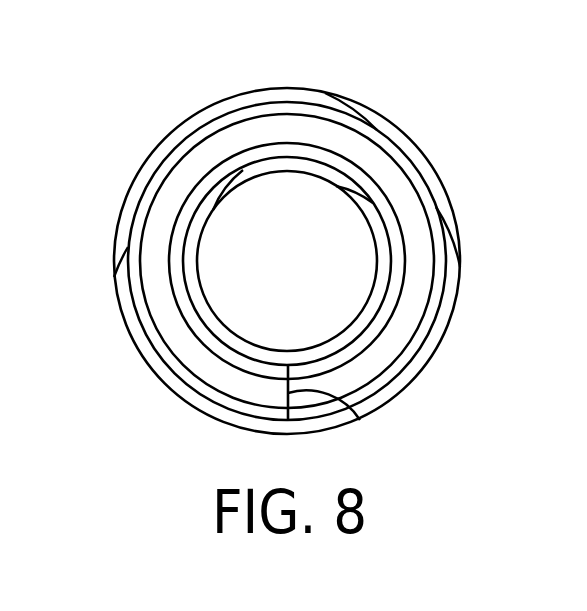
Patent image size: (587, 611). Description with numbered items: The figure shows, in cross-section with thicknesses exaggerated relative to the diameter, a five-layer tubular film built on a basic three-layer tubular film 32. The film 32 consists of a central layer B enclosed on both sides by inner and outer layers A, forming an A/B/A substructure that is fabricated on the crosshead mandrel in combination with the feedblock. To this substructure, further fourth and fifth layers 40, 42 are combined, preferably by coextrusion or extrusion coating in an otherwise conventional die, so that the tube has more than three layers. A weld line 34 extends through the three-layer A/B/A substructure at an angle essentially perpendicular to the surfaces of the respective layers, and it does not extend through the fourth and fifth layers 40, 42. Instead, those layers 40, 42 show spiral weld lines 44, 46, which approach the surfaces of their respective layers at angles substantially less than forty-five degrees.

The tubular film 32 is at (268, 100).
The fourth layer 40 is at (195, 120).
The spiral weld line 44 is at (343, 108).
The fifth layer 42 is at (380, 266).
The spiral weld line 46 is at (198, 304).
The weld line 34 is at (345, 407).
The inner and outer layers A is at (415, 172).
The central layer B is at (413, 215).